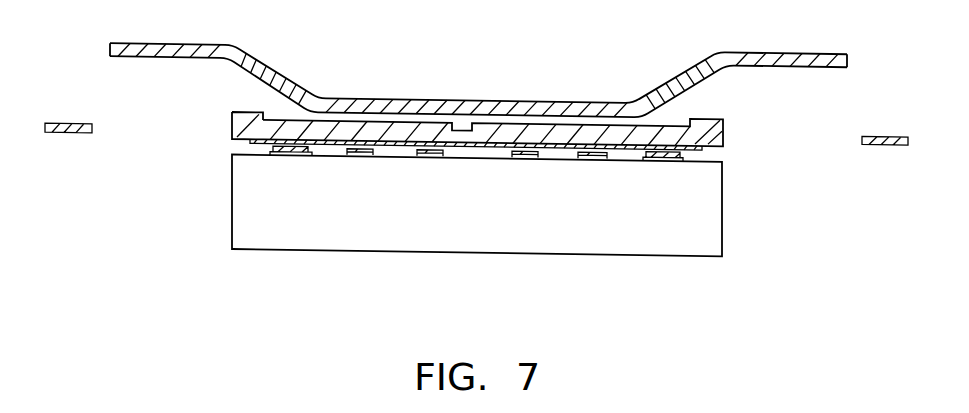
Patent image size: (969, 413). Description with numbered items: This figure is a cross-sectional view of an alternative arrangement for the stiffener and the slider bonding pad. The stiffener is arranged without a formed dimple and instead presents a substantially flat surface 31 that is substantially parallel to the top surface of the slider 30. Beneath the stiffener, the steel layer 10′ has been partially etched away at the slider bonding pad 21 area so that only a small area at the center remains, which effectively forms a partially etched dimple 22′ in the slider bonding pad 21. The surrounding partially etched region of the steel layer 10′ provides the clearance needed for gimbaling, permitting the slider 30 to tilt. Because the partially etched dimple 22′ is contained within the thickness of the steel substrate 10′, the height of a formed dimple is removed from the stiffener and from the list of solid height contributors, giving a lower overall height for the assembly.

The substantially flat surface 31 is at (440, 100).
The slider bonding pad 21 is at (232, 118).
The steel layer 10′ is at (693, 117).
The partially etched dimple 22′ is at (463, 120).
The slider 30 is at (722, 202).